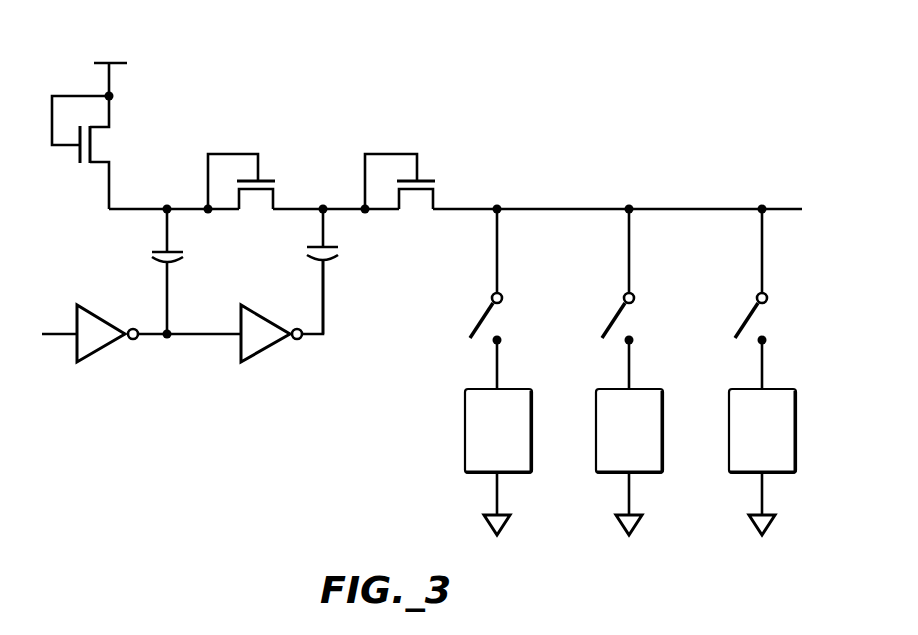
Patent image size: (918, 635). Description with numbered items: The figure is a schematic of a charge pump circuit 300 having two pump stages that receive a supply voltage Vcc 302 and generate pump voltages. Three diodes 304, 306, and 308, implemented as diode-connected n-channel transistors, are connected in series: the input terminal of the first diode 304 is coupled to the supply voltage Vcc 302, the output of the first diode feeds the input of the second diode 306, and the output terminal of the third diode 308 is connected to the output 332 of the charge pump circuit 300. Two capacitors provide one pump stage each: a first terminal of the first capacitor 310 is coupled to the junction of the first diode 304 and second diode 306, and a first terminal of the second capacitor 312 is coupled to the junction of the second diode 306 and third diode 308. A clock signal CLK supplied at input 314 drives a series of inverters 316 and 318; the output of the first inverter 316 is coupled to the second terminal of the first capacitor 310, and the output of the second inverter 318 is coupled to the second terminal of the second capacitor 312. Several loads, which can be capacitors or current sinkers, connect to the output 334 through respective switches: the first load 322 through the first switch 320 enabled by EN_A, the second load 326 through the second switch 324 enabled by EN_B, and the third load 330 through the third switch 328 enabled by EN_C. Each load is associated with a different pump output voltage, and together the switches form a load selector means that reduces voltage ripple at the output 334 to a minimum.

The charge pump circuit 300 is at (345, 90).
The supply voltage Vcc 302 is at (118, 62).
The first diode 304 is at (110, 117).
The second diode 306 is at (275, 203).
The third diode 308 is at (435, 203).
The first capacitor 310 is at (160, 248).
The second capacitor 312 is at (318, 245).
The input 314 is at (58, 336).
The first inverter 316 is at (95, 308).
The second inverter 318 is at (258, 310).
The first switch 320 is at (480, 322).
The first load 322 is at (513, 388).
The second switch 324 is at (611, 322).
The second load 326 is at (645, 388).
The third switch 328 is at (744, 322).
The third load 330 is at (779, 388).
The output of the charge pump circuit 332 is at (507, 528).
The output 334 is at (687, 209).